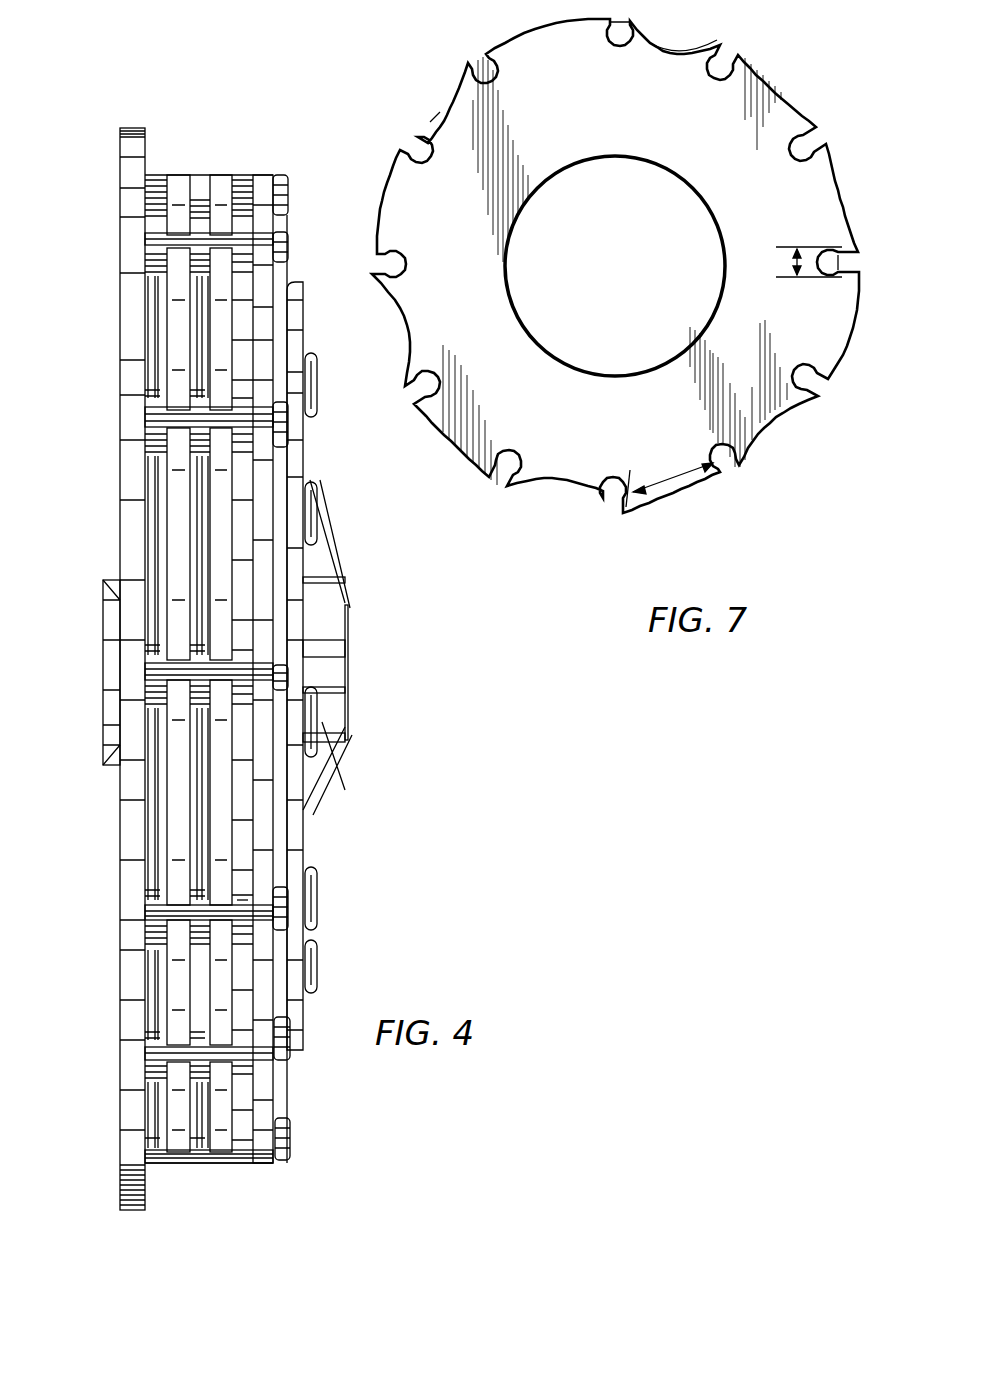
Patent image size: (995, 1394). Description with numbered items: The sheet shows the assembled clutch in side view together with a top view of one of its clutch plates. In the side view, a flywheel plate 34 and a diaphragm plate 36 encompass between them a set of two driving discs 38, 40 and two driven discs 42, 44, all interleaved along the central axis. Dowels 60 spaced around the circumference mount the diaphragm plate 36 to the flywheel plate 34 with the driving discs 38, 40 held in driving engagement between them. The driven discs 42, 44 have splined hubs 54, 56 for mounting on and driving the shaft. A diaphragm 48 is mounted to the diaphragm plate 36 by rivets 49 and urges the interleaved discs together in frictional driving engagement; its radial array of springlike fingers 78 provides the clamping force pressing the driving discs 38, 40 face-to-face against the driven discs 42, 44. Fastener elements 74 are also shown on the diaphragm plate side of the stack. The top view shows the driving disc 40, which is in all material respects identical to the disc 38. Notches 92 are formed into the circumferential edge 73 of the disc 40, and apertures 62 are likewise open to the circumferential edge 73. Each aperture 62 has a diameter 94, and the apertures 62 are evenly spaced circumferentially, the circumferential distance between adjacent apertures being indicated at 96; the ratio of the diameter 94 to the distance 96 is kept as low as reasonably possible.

In FIG. 4, the flywheel plate 34 is at (133, 1100).
In FIG. 4, the diaphragm plate 36 is at (264, 178).
In FIG. 4, the driving disc 38 is at (183, 178).
In FIG. 4, the driving disc 40 is at (222, 178).
In FIG. 7, the driving disc 40 is at (626, 425).
In FIG. 4, the driven disc 42 is at (165, 988).
In FIG. 4, the driven disc 44 is at (205, 502).
In FIG. 4, the diaphragm 48 is at (300, 335).
In FIG. 4, the rivets 49 is at (312, 385).
In FIG. 4, the splined hub 54 is at (115, 741).
In FIG. 4, the splined hub 56 is at (243, 760).
In FIG. 4, the dowels 60 is at (158, 195).
In FIG. 7, the apertures 62 is at (408, 140).
In FIG. 7, the circumferential edge 73 is at (427, 120).
In FIG. 4, the fastener 74 is at (288, 238).
In FIG. 4, the fingers 78 is at (348, 640).
In FIG. 7, the notches 92 is at (458, 103).
In FIG. 7, the diameter 94 is at (775, 262).
In FIG. 7, the circumferential distance 96 is at (683, 492).